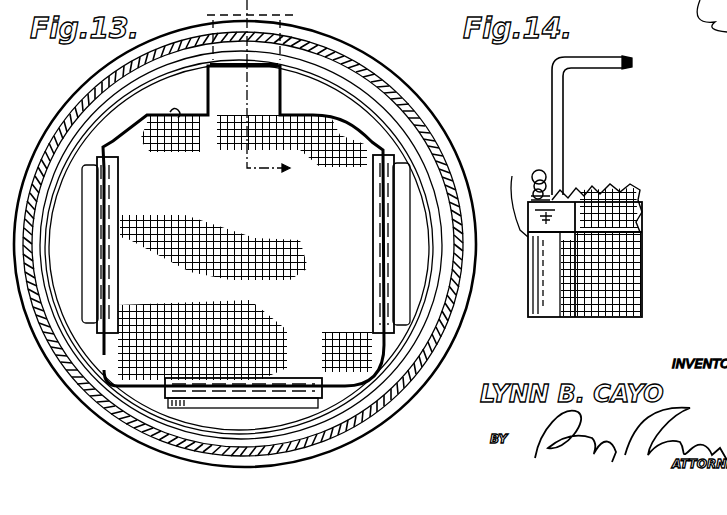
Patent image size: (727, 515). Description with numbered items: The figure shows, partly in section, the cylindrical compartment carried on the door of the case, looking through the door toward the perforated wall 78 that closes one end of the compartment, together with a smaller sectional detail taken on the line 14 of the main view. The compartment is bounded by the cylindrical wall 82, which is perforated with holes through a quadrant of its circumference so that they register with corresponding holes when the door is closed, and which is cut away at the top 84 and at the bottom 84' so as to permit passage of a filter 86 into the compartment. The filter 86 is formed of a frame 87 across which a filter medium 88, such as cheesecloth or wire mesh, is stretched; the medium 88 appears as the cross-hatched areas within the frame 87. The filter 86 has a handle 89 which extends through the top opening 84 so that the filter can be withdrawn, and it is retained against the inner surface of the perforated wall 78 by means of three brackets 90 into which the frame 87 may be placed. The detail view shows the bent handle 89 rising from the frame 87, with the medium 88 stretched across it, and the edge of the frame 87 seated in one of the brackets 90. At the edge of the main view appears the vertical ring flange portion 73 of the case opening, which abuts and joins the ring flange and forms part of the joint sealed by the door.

In FIG. 13, the section line 14— 14 is at (280, 92).
In FIG. 14, the vertical ring flange portion 73 is at (699, 16).
In FIG. 13, the perforated wall 78 is at (423, 278).
In FIG. 13, the cylindrical wall 82 is at (66, 118).
In FIG. 13, the top cut-away opening 84 is at (243, 241).
In FIG. 13, the bottom cut-away opening 84' is at (241, 250).
In FIG. 13, the filter 86 is at (137, 148).
In FIG. 14, the filter 86 is at (645, 269).
In FIG. 13, the frame 87 is at (183, 92).
In FIG. 14, the frame 87 is at (528, 176).
In FIG. 13, the filter medium 88 is at (208, 201).
In FIG. 14, the filter medium 88 is at (642, 243).
In FIG. 13, the handle 89 is at (281, 58).
In FIG. 14, the handle 89 is at (632, 63).
In FIG. 13, the brackets 90 is at (184, 378).